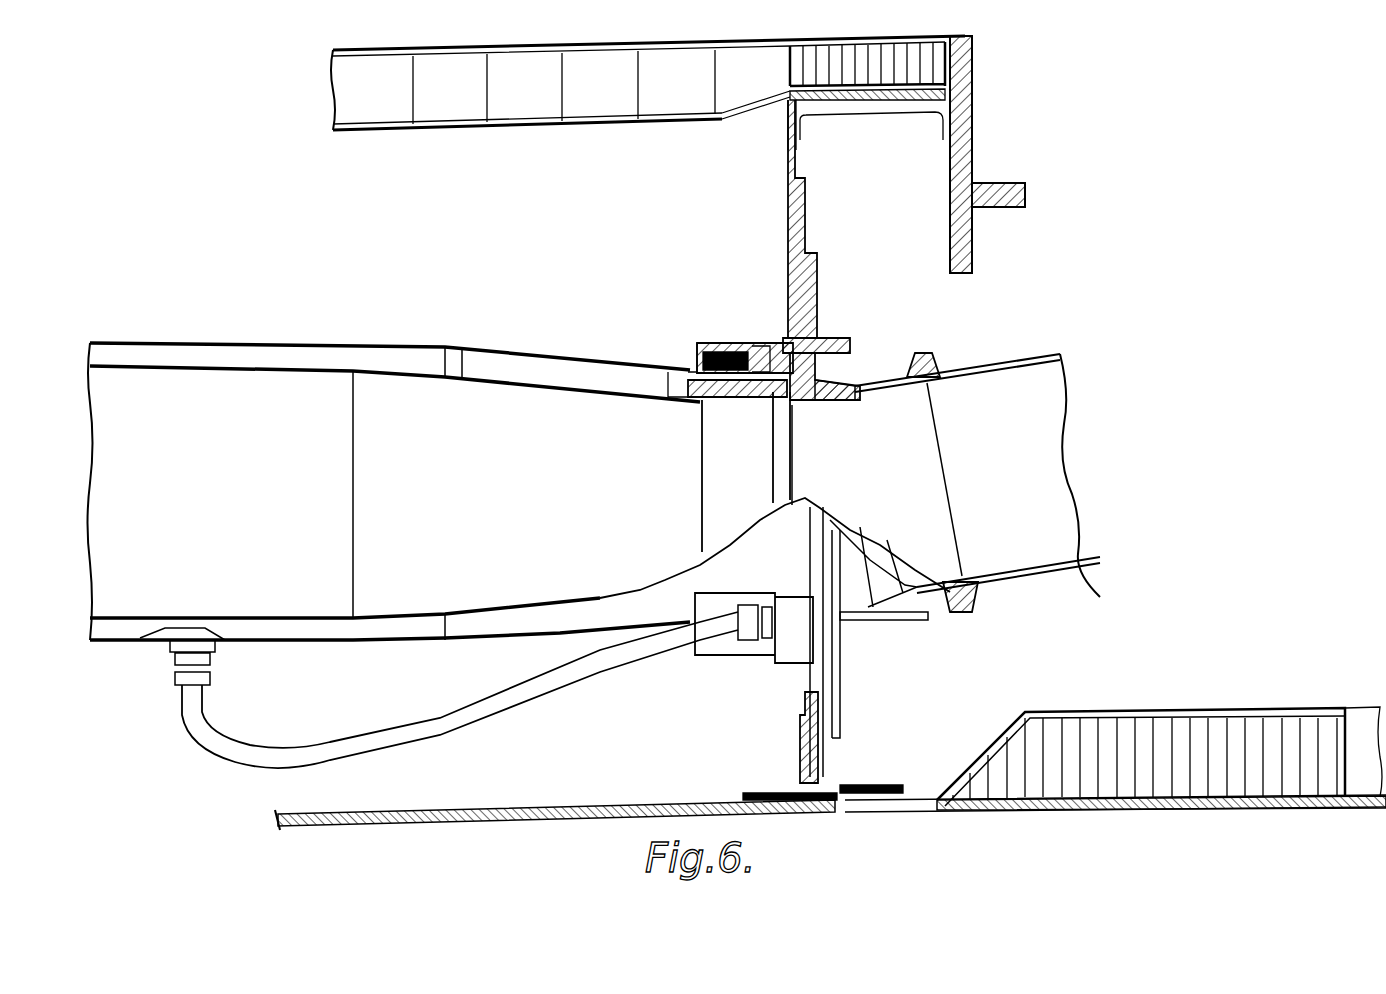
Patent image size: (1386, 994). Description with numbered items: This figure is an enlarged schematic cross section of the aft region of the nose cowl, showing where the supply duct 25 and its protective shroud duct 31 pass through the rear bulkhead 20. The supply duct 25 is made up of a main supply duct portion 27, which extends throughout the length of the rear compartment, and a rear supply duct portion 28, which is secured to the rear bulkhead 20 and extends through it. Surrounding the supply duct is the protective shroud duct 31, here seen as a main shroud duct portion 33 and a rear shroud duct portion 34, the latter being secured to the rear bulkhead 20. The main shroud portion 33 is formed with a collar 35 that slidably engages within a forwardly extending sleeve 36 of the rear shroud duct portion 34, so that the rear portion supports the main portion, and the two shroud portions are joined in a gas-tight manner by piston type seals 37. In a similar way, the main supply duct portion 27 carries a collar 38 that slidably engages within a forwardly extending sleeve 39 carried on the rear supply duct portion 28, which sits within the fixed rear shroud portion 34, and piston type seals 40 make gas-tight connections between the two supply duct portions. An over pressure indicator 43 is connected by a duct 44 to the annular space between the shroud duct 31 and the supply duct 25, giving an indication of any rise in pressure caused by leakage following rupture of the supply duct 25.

The rear bulkhead 20 is at (795, 253).
The supply duct 25 is at (215, 483).
The main supply duct portion 27 is at (505, 425).
The rear supply duct portion 28 is at (835, 483).
The protective shroud duct 31 is at (218, 341).
The main shroud duct portion 33 is at (360, 360).
The rear shroud duct portion 34 is at (824, 328).
The collar 35 is at (697, 360).
The forwardly extending sleeve 36 is at (762, 343).
The piston type seals 37 is at (726, 343).
The collar 38 is at (735, 398).
The forwardly extending sleeve 39 is at (690, 398).
The piston type seals 40 is at (768, 398).
The over pressure indicator 43 is at (855, 622).
The duct 44 is at (415, 720).